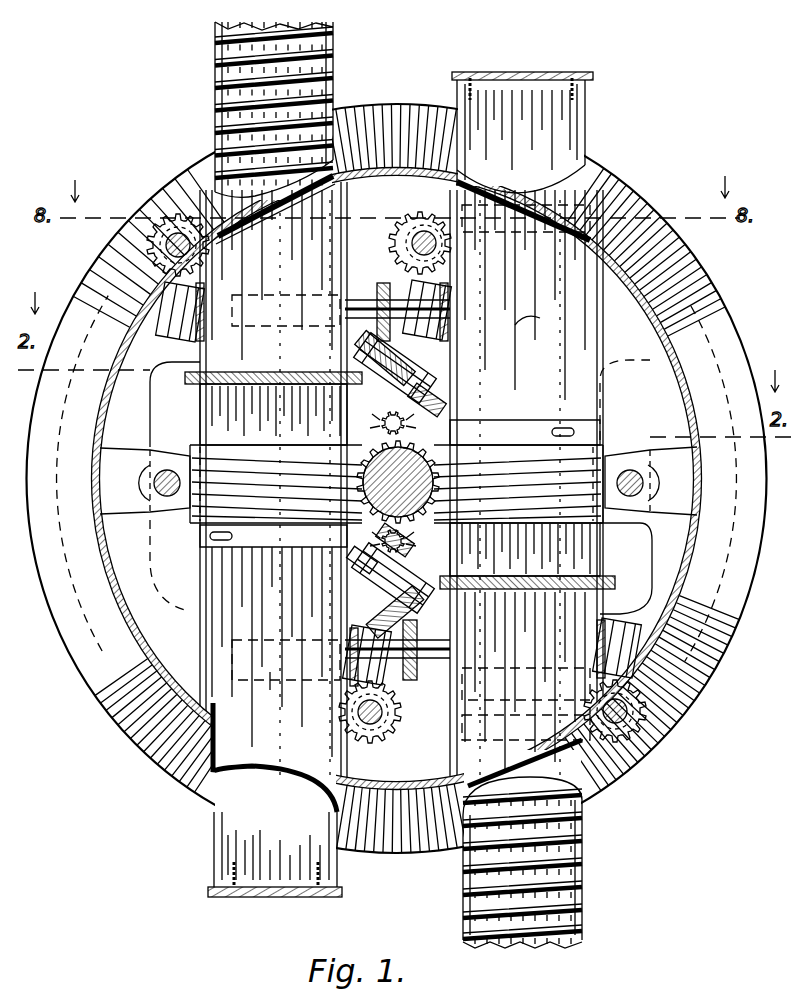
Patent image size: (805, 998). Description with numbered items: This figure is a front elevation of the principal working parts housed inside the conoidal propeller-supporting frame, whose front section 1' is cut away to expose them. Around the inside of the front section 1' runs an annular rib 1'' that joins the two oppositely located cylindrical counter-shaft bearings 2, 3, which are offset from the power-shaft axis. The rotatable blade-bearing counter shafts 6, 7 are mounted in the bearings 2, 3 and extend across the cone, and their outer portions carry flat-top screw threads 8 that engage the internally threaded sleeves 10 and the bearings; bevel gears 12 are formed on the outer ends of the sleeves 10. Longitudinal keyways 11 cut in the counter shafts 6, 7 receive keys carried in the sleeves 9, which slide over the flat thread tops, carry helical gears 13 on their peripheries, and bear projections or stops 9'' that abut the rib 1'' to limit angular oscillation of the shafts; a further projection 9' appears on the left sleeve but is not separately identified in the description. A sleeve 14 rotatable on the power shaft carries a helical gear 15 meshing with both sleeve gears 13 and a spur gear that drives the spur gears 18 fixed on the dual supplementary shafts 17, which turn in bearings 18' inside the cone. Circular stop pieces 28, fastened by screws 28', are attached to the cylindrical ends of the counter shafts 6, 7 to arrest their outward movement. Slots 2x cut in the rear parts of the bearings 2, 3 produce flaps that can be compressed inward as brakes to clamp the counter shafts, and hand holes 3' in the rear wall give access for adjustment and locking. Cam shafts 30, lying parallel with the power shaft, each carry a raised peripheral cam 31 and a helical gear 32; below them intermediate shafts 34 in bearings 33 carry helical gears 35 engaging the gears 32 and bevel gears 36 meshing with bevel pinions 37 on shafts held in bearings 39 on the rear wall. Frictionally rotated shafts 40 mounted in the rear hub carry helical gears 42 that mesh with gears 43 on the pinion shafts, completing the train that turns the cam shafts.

The front section of frame 1' is at (397, 478).
The annular rib 1'' is at (397, 479).
The counter-shaft bearing 2 is at (273, 479).
The slot 2x is at (411, 490).
The counter-shaft bearing 3 is at (526, 483).
The hand hole 3' is at (397, 479).
The blade-bearing counter shaft 6 is at (275, 454).
The blade-bearing counter shaft 7 is at (588, 833).
The flat top screw threads 8 is at (333, 93).
The sleeve 9 is at (400, 483).
The slot 9' is at (201, 540).
The stop 9'' is at (594, 431).
The internally threaded sleeve 10 is at (400, 480).
The keyway 11 is at (408, 501).
The bevel gear 12 is at (400, 492).
The helical gear 13 is at (403, 480).
The sleeve 14 is at (381, 540).
The helical gear 15 is at (378, 424).
The supplementary shaft 17 is at (170, 496).
The spur gear 18 is at (145, 481).
The bearing 18' is at (651, 481).
The circular stop piece 28 is at (391, 484).
The screw 28' is at (403, 485).
The cam shaft 30 is at (398, 477).
The peripheral cam 31 is at (396, 476).
The helical gear 32 is at (396, 481).
The bearing 33 is at (411, 490).
The intermediate shaft 34 is at (360, 298).
The helical gear 35 is at (399, 482).
The bevel gear 36 is at (398, 475).
The bevel pinion 37 is at (396, 479).
The bearing 39 is at (394, 473).
The frictionally rotated shaft 40 is at (404, 481).
The helical gear 42 is at (404, 457).
The gear 43 is at (408, 564).